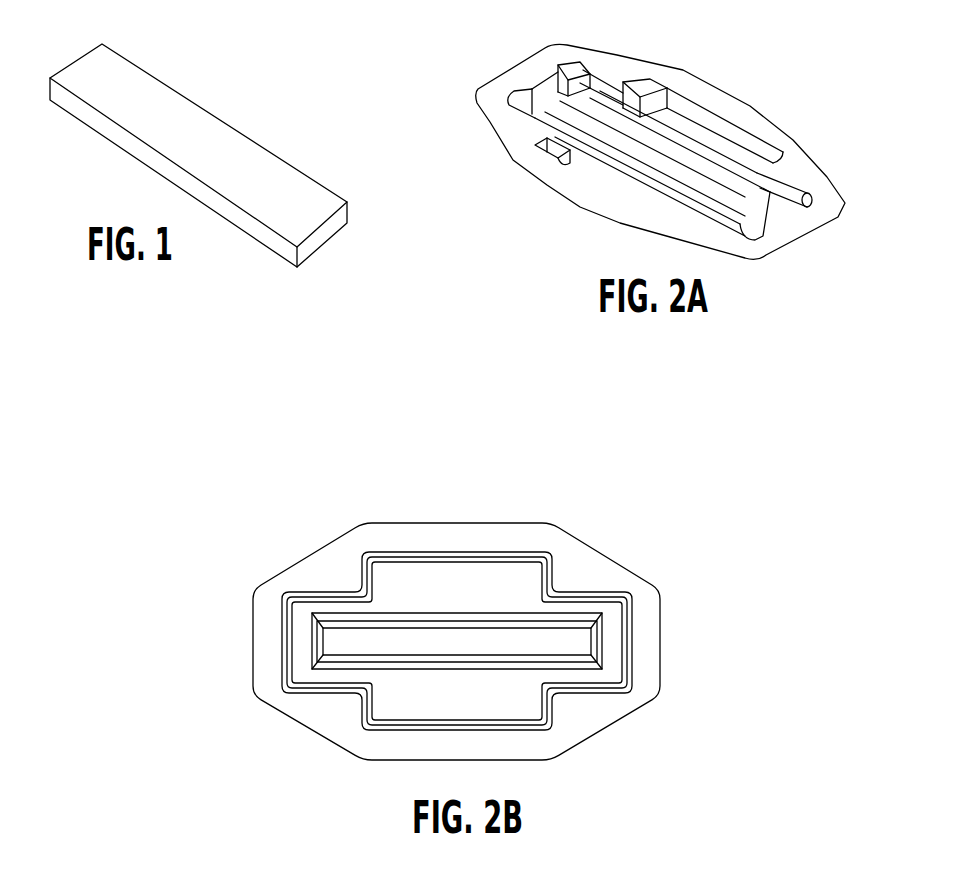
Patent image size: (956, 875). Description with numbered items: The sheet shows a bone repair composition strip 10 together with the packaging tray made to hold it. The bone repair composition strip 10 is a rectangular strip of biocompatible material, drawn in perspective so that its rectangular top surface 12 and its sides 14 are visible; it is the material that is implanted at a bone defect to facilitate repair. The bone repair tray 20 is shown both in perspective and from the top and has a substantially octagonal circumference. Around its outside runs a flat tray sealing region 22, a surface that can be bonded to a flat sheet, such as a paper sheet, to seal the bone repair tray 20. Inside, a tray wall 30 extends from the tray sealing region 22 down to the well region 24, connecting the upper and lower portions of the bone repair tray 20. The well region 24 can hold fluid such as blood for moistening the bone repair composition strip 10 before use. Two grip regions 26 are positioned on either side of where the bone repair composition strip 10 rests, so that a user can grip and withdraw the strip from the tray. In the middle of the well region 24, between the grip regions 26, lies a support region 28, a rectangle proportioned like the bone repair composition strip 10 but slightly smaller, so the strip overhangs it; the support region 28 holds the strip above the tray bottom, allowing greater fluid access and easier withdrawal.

In FIG. 1, the bone repair composition strip 10 is at (200, 171).
In FIG. 1, the rectangular top surface 12 is at (267, 183).
In FIG. 1, the sides 14 is at (270, 252).
In FIG. 2A, the bone repair tray 20 is at (661, 133).
In FIG. 2B, the bone repair tray 20 is at (456, 623).
In FIG. 2A, the tray sealing region 22 is at (617, 63).
In FIG. 2B, the tray sealing region 22 is at (582, 573).
In FIG. 2A, the well region 24 is at (760, 187).
In FIG. 2B, the well region 24 is at (344, 677).
In FIG. 2B, the grip regions 26 is at (490, 592).
In FIG. 2B, the support region 28 is at (507, 647).
In FIG. 2A, the tray wall 30 is at (677, 110).